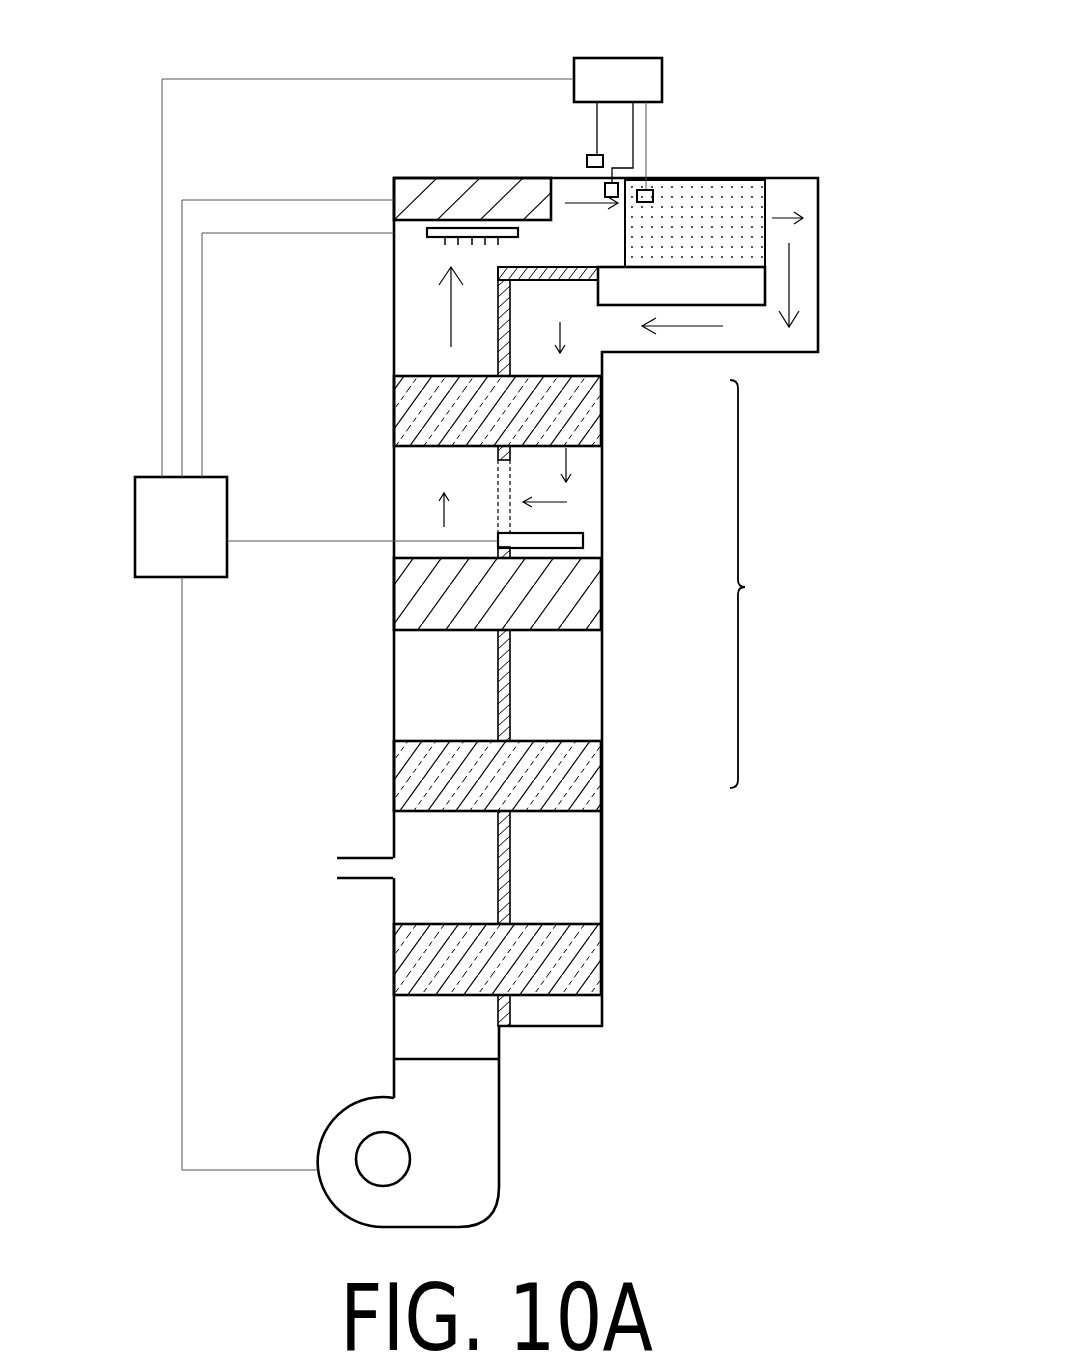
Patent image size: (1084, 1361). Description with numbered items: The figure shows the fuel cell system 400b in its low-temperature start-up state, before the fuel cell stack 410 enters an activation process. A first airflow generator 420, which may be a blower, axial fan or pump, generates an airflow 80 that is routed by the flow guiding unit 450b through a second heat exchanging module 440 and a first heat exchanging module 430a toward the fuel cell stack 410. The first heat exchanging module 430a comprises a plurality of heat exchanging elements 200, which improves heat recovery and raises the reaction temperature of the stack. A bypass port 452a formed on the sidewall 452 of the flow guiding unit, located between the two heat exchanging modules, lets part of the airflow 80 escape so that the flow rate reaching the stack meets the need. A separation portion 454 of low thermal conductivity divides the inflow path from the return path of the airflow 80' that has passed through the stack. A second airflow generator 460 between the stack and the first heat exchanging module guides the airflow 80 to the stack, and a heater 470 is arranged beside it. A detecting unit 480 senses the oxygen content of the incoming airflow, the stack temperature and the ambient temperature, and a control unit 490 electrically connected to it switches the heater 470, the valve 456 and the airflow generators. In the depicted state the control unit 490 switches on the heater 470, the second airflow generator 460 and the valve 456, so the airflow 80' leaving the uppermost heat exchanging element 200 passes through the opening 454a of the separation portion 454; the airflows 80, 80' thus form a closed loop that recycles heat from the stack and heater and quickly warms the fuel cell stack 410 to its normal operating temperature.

The fuel cell system 400b is at (822, 1081).
The fuel cell stack 410 is at (698, 190).
The first airflow generator 420 is at (499, 1142).
The first heat exchanging module 430a is at (777, 584).
The second heat exchanging module 440 is at (587, 962).
The heat exchanging element 200 is at (587, 413).
The flow guiding unit 450b is at (601, 873).
The sidewall 452 is at (385, 688).
The bypass port 452a is at (408, 868).
The separation portion 454 is at (498, 325).
The opening 454a is at (485, 484).
The valve 456 is at (572, 541).
The second airflow generator 460 is at (478, 185).
The heater 470 is at (427, 240).
The detecting unit 480 is at (653, 70).
The control unit 490 is at (135, 525).
The airflow 80 is at (515, 362).
The airflow 80' is at (841, 269).